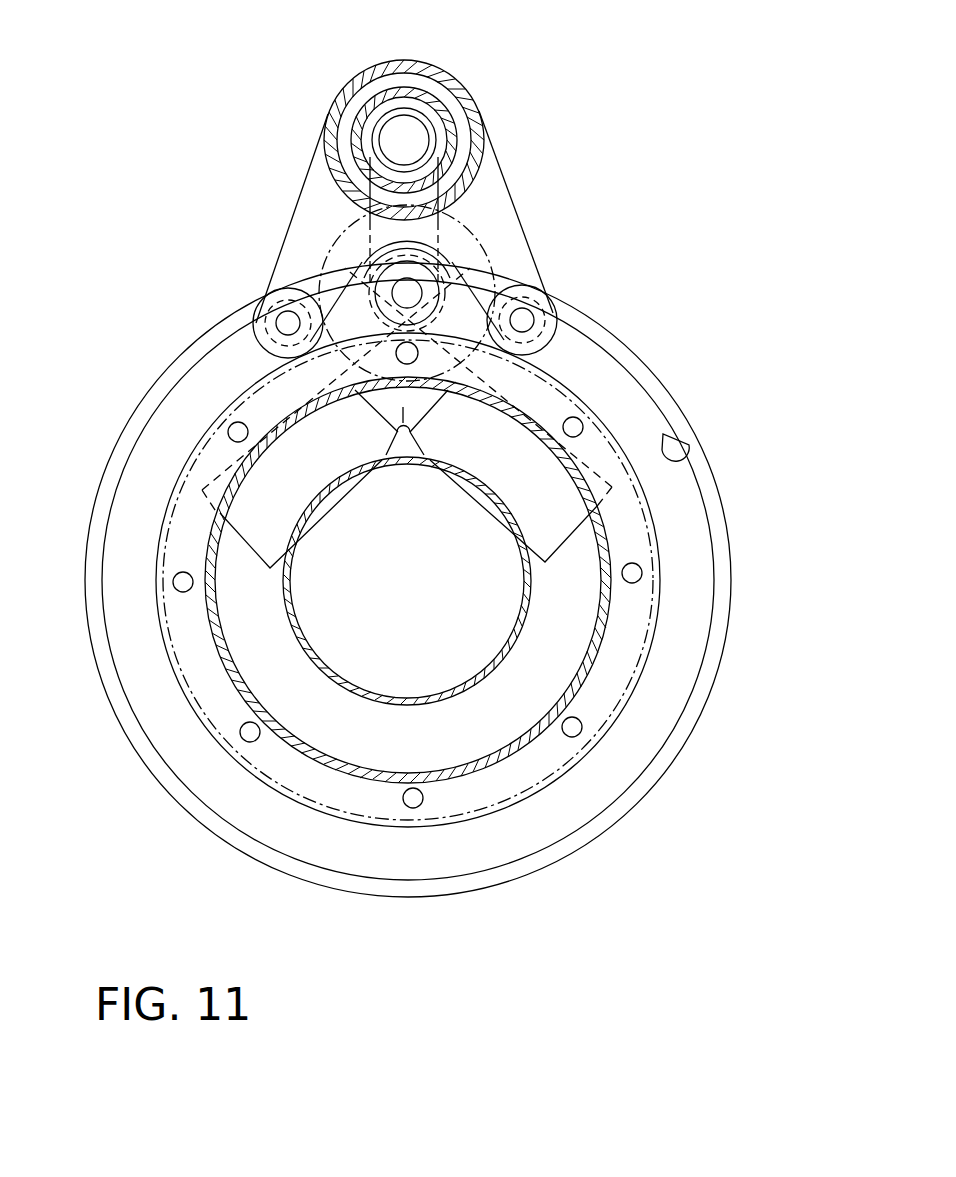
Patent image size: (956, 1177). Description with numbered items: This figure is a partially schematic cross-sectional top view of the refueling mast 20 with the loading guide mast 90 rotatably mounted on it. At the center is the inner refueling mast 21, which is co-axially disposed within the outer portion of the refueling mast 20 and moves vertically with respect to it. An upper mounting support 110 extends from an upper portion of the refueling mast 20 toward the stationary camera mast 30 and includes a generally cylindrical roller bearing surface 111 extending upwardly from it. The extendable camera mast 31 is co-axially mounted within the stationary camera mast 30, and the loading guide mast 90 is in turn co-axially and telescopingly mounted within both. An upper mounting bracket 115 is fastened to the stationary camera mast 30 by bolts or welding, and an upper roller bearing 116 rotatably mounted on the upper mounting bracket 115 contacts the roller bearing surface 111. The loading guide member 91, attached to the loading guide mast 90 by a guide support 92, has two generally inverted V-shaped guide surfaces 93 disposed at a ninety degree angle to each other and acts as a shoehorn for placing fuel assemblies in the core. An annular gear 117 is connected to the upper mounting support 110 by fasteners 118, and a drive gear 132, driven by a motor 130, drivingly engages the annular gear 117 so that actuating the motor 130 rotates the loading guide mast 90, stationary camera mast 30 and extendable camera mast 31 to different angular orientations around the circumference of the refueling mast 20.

The refueling mast 20 is at (513, 753).
The inner refueling mast 21 is at (470, 668).
The stationary camera mast 30 is at (380, 67).
The extendable camera mast 31 is at (405, 85).
The loading guide mast 90 is at (437, 212).
The loading guide member 91 is at (407, 437).
The guide support 92 is at (437, 232).
The guide surfaces 93 is at (297, 472).
The upper mounting support 110 is at (690, 580).
The roller bearing surface 111 is at (688, 462).
The upper mounting bracket 115 is at (318, 193).
The upper roller bearing 116 is at (255, 316).
The annular gear 117 is at (207, 427).
The fasteners 118 is at (183, 570).
The motor 130 is at (487, 257).
The drive gear 132 is at (340, 288).